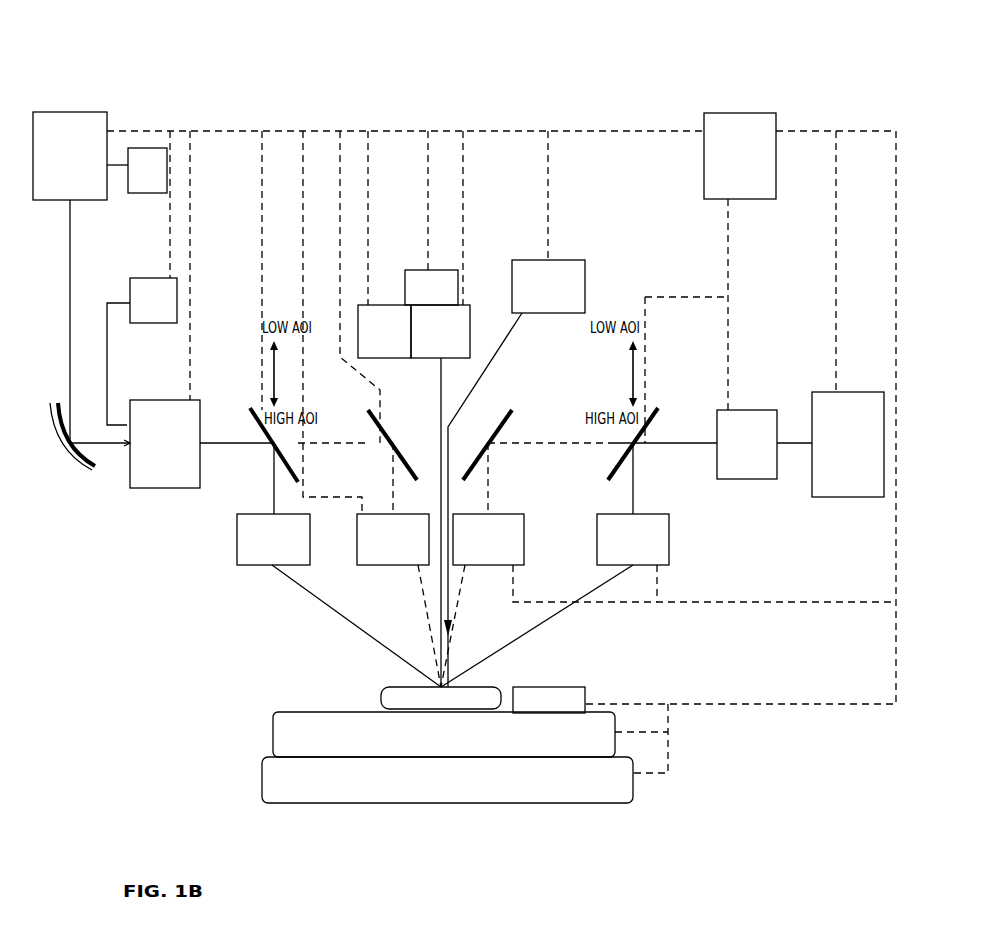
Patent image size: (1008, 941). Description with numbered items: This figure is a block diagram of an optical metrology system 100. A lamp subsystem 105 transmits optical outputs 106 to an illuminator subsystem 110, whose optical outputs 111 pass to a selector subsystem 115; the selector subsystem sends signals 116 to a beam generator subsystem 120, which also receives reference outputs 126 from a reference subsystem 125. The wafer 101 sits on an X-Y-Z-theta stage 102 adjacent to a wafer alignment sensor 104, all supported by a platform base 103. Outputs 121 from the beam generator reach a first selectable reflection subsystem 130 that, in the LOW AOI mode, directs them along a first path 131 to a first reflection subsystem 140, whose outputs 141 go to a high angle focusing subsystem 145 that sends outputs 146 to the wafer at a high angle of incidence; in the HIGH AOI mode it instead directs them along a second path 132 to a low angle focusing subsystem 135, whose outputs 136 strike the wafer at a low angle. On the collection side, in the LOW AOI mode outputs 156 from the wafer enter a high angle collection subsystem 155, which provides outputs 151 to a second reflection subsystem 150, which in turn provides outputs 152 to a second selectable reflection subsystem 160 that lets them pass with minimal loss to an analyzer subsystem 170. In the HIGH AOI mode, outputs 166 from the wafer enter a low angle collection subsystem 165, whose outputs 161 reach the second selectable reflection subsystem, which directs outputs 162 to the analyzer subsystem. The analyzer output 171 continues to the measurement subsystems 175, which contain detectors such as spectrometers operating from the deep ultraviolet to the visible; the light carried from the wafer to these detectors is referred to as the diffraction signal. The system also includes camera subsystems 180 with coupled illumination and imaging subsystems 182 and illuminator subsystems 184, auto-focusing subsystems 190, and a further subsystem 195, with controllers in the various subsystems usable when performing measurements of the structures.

The optical metrology system 100 is at (497, 82).
The wafer 101 is at (452, 707).
The X-Y-Z-theta stage 102 is at (455, 743).
The platform base 103 is at (455, 789).
The wafer alignment sensor 104 is at (560, 709).
The lamp subsystem 105 is at (158, 179).
The optical outputs 106 is at (116, 195).
The illuminator subsystem 110 is at (81, 165).
The optical outputs 111 is at (58, 270).
The selector subsystem 115 is at (58, 446).
The signals 116 is at (118, 467).
The beam generator subsystem 120 is at (176, 452).
The outputs 121 is at (226, 457).
The reference subsystem 125 is at (164, 309).
The reference outputs 126 is at (118, 318).
The first selectable reflection subsystem 130 is at (248, 405).
The first path 131 is at (328, 438).
The second path 132 is at (270, 484).
The low angle focusing subsystem 135 is at (284, 548).
The outputs 136 is at (285, 597).
The first reflection subsystem 140 is at (364, 399).
The outputs 141 is at (392, 482).
The high angle focusing subsystem 145 is at (404, 548).
The outputs 146 is at (417, 623).
The second reflection subsystem 150 is at (517, 407).
The outputs 151 is at (495, 490).
The outputs 152 is at (553, 427).
The high angle collection subsystem 155 is at (499, 548).
The outputs 156 is at (463, 607).
The second selectable reflection subsystem 160 is at (663, 399).
The outputs 161 is at (638, 490).
The outputs 162 is at (667, 436).
The low angle collection subsystem 165 is at (644, 548).
The outputs 166 is at (585, 617).
The analyzer subsystem 170 is at (758, 452).
The output 171 is at (794, 437).
The measurement subsystems 175 is at (859, 452).
The camera subsystems 180 is at (442, 296).
The illumination and imaging subsystems 182 is at (452, 340).
The illuminator subsystems 184 is at (395, 340).
The auto-focusing subsystems 190 is at (559, 295).
The subsystem 195 is at (751, 165).